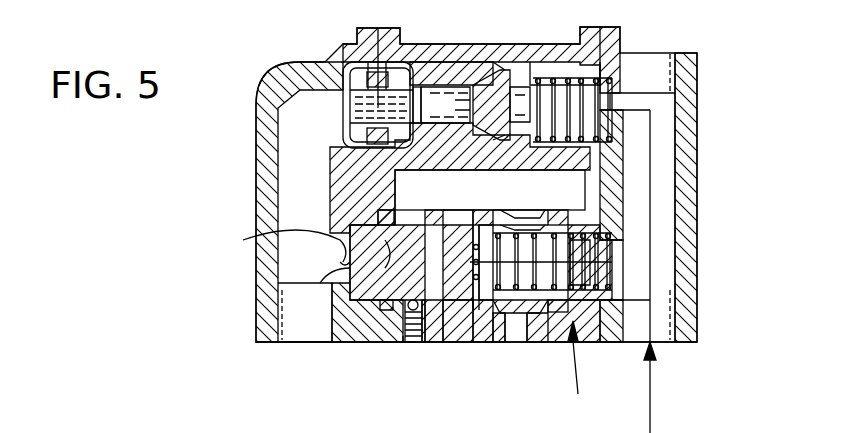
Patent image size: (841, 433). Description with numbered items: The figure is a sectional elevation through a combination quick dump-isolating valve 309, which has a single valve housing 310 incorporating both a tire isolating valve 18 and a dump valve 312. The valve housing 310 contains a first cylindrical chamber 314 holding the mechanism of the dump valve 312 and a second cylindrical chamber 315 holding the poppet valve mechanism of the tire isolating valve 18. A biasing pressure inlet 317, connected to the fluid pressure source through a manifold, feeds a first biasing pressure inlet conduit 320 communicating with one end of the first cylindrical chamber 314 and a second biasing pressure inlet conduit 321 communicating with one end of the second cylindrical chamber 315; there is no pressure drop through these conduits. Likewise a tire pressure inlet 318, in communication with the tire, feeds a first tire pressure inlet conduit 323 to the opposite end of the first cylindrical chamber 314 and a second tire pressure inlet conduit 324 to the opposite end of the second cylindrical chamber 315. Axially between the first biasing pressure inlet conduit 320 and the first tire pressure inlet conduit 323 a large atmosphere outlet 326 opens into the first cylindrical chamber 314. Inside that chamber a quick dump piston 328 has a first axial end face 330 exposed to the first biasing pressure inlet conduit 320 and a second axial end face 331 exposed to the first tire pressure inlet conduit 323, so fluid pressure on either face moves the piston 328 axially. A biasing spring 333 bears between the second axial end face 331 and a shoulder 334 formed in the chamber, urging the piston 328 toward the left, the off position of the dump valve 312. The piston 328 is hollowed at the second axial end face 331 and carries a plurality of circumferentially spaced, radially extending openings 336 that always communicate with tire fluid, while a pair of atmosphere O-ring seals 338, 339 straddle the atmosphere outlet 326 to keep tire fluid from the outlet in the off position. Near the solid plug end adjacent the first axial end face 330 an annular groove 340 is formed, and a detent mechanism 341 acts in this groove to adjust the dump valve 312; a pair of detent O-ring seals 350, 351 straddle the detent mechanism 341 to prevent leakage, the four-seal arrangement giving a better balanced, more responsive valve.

The tire isolating valve 18 is at (547, 46).
The combination quick dump-isolating valve 309 is at (338, 370).
The valve housing 310 is at (352, 45).
The dump valve 312 is at (587, 370).
The first cylindrical chamber 314 is at (612, 250).
The second cylindrical chamber 315 is at (573, 140).
The biasing pressure inlet 317 is at (284, 344).
The tire pressure inlet 318 is at (670, 346).
The first biasing pressure inlet conduit 320 is at (345, 258).
The second biasing pressure inlet conduit 321 is at (336, 123).
The first tire pressure inlet conduit 323 is at (628, 295).
The second tire pressure inlet conduit 324 is at (625, 102).
The atmosphere outlet 326 is at (515, 330).
The quick dump piston 328 is at (367, 312).
The first axial end face 330 is at (329, 290).
The second axial end face 331 is at (450, 332).
The biasing spring 333 is at (543, 320).
The shoulder 334 is at (605, 281).
The radially extending openings 336 is at (541, 261).
The atmosphere O-ring seal 338 is at (491, 208).
The atmosphere O-ring seal 339 is at (577, 207).
The annular groove 340 is at (350, 229).
The detent mechanism 341 is at (421, 355).
The detent O-ring seal 350 is at (392, 208).
The detent O-ring seal 351 is at (442, 207).